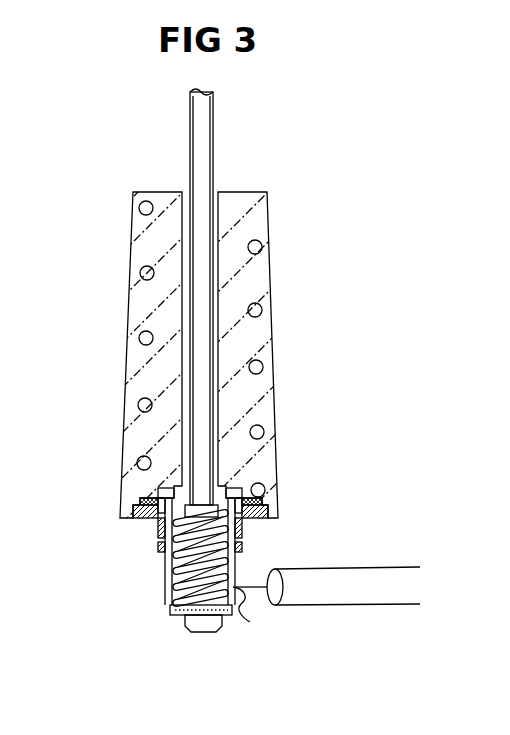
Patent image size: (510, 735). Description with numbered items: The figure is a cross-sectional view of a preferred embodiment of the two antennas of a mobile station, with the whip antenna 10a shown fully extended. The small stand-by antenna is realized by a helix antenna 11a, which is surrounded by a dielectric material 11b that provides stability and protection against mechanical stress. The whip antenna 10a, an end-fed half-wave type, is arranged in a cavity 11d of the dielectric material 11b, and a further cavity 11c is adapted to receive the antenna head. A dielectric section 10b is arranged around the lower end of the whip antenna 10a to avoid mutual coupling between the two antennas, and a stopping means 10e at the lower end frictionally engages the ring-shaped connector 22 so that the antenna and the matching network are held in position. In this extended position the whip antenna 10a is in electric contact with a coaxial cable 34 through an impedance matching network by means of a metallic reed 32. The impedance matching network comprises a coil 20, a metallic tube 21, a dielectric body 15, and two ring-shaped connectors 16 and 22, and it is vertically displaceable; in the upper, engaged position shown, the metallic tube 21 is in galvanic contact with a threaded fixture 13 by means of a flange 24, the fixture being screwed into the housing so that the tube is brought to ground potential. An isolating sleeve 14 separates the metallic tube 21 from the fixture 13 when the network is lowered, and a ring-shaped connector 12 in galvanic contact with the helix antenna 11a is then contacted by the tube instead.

The whip antenna 10a is at (243, 297).
The dielectric section 10b is at (278, 537).
The stopping means 10e is at (209, 659).
The helix antenna 11a is at (307, 354).
The dielectric material 11b is at (275, 362).
The cavity 11c is at (128, 360).
The cavity 11d is at (124, 355).
The ring-shaped connector 12 is at (246, 491).
The threaded fixture 13 is at (314, 518).
The isolating sleeve 14 is at (278, 537).
The dielectric body 15 is at (117, 538).
The ring-shaped connector 16 is at (165, 484).
The coil 20 is at (158, 600).
The metallic tube 21 is at (155, 552).
The ring-shaped connector 22 is at (150, 630).
The flange 24 is at (155, 564).
The metallic reed 32 is at (255, 634).
The coaxial cable 34 is at (327, 618).